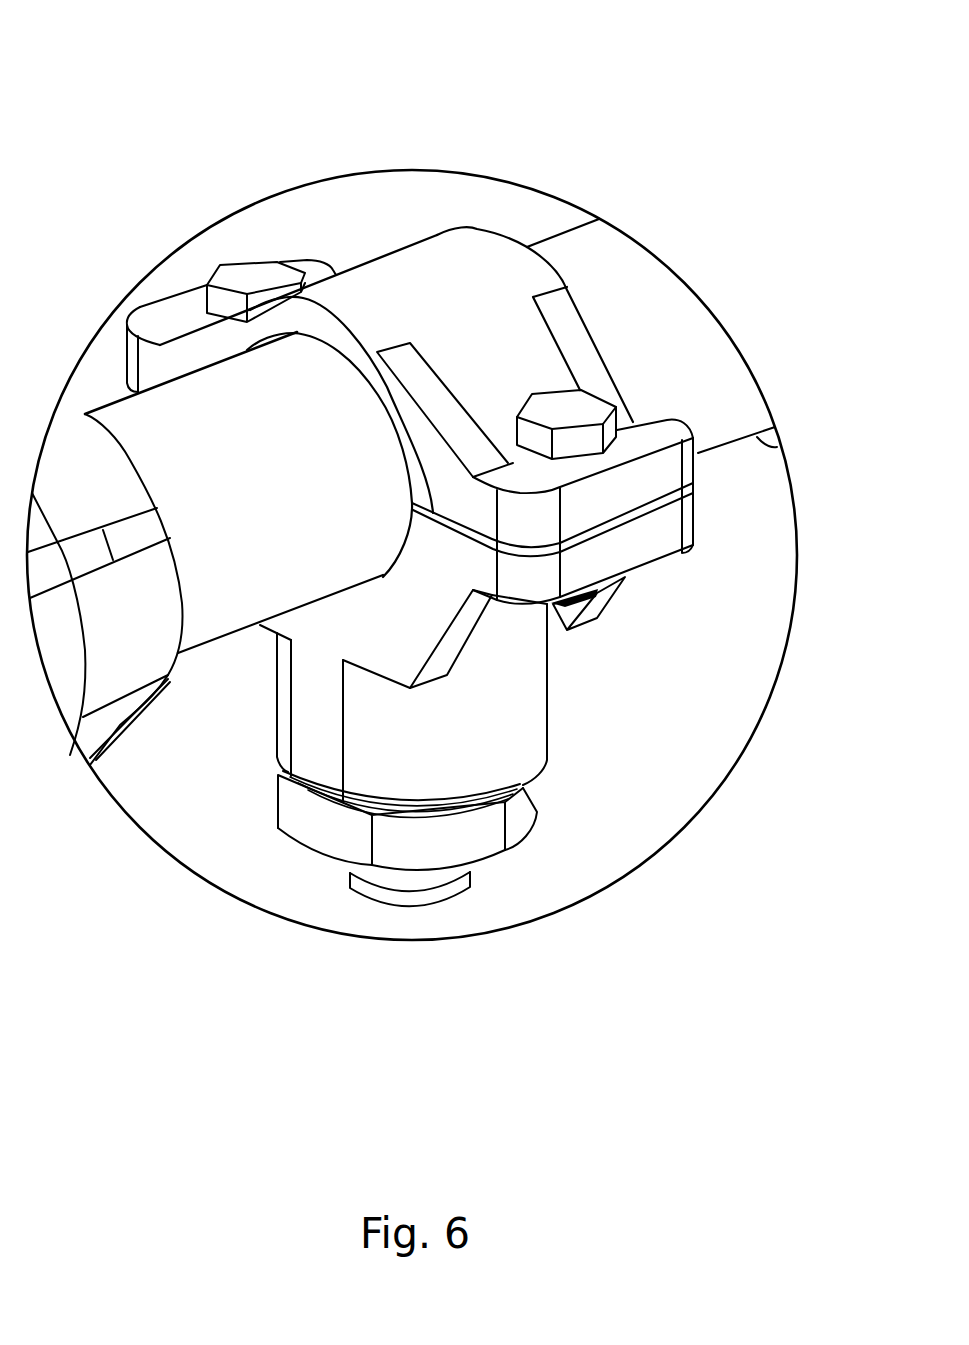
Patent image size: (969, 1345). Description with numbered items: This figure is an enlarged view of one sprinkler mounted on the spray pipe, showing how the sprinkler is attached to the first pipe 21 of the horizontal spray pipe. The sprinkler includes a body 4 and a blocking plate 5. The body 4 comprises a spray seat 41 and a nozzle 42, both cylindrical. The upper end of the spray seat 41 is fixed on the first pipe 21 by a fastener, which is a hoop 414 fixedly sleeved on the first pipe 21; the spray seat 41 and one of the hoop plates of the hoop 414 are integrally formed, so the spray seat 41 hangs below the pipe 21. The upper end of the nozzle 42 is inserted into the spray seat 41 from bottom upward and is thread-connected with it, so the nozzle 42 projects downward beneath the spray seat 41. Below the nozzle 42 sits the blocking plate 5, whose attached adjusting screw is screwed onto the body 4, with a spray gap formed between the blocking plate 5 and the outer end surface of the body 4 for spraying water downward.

The pipe 21 is at (235, 445).
The hoop 414 is at (458, 328).
The body 4 is at (595, 735).
The spray seat 41 is at (495, 733).
The nozzle 42 is at (317, 823).
The blocking plate 5 is at (428, 903).